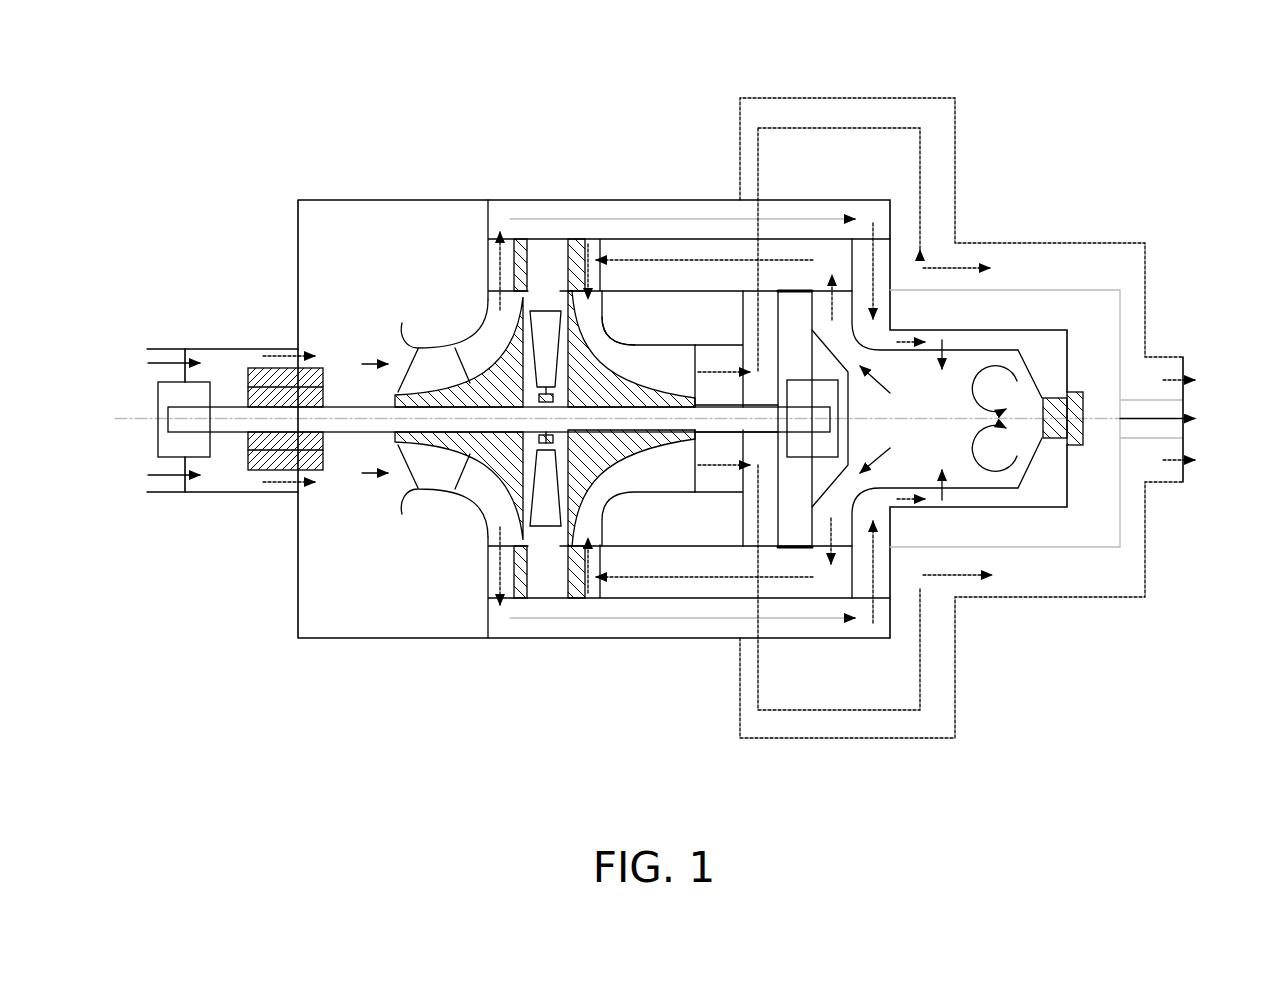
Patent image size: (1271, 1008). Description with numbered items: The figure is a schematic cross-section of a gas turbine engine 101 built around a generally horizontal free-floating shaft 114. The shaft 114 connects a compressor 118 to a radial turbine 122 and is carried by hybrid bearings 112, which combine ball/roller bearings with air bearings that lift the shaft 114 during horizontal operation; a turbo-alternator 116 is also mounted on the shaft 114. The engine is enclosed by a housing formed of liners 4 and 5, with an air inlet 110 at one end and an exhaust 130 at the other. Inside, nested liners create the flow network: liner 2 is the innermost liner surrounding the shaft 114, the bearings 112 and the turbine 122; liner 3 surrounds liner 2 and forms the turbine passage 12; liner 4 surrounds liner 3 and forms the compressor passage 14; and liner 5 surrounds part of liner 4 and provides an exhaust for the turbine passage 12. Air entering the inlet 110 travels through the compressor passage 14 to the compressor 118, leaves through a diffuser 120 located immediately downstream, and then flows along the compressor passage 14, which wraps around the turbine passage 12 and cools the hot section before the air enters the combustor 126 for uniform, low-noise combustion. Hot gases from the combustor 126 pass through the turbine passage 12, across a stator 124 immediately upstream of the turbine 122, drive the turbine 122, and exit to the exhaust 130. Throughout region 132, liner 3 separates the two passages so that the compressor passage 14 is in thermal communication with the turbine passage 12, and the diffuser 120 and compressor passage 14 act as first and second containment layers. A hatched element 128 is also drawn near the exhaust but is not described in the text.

The gas turbine engine 101 is at (178, 130).
The air inlet 110 is at (145, 360).
The hybrid bearings 112 is at (157, 433).
The free-floating shaft 114 is at (228, 403).
The turbo-alternator 116 is at (255, 468).
The compressor 118 is at (433, 477).
The diffuser 120 is at (527, 600).
The turbine 122 is at (650, 480).
The stator 124 is at (592, 600).
The combustor 126 is at (995, 473).
The flow restrictor 128 is at (1077, 360).
The exhaust 130 is at (1207, 462).
The region 132 is at (858, 153).
The compressor passage 14 is at (608, 220).
The liner 2 is at (708, 292).
The liner 3 is at (690, 237).
The liner 4 is at (282, 345).
The liner 5 is at (853, 97).
The turbine passage 12 is at (870, 378).